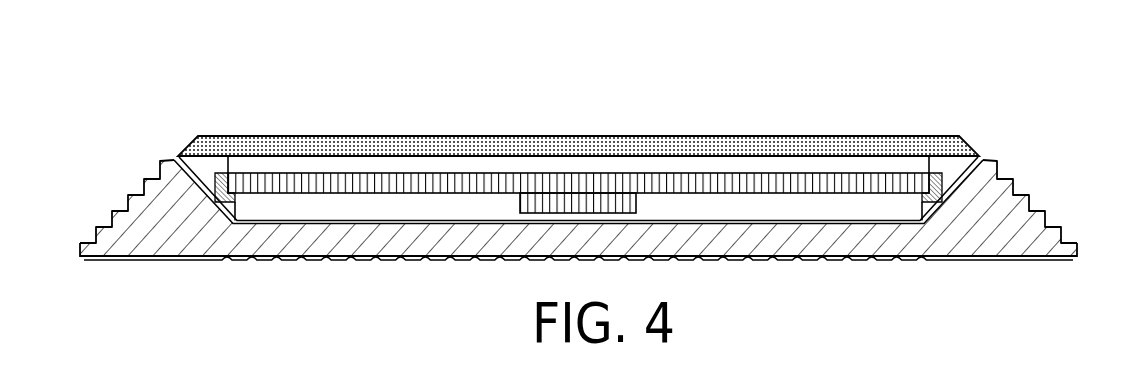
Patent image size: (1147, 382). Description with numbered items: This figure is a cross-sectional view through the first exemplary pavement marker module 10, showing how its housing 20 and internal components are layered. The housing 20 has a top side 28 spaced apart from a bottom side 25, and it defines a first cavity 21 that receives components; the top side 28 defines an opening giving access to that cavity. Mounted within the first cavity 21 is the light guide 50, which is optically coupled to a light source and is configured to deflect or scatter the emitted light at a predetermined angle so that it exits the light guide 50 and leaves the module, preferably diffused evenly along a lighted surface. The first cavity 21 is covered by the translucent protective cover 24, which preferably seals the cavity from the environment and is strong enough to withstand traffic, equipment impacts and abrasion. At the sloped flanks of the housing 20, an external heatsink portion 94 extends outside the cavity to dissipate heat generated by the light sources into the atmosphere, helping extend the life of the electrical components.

The pavement marker module 10 is at (942, 68).
The housing 20 is at (1017, 223).
The first cavity 21 is at (712, 163).
The protective cover 24 is at (939, 136).
The bottom side 25 is at (964, 257).
The top side 28 is at (878, 137).
The light guide 50 is at (420, 182).
The external heatsink portion 94 is at (150, 183).